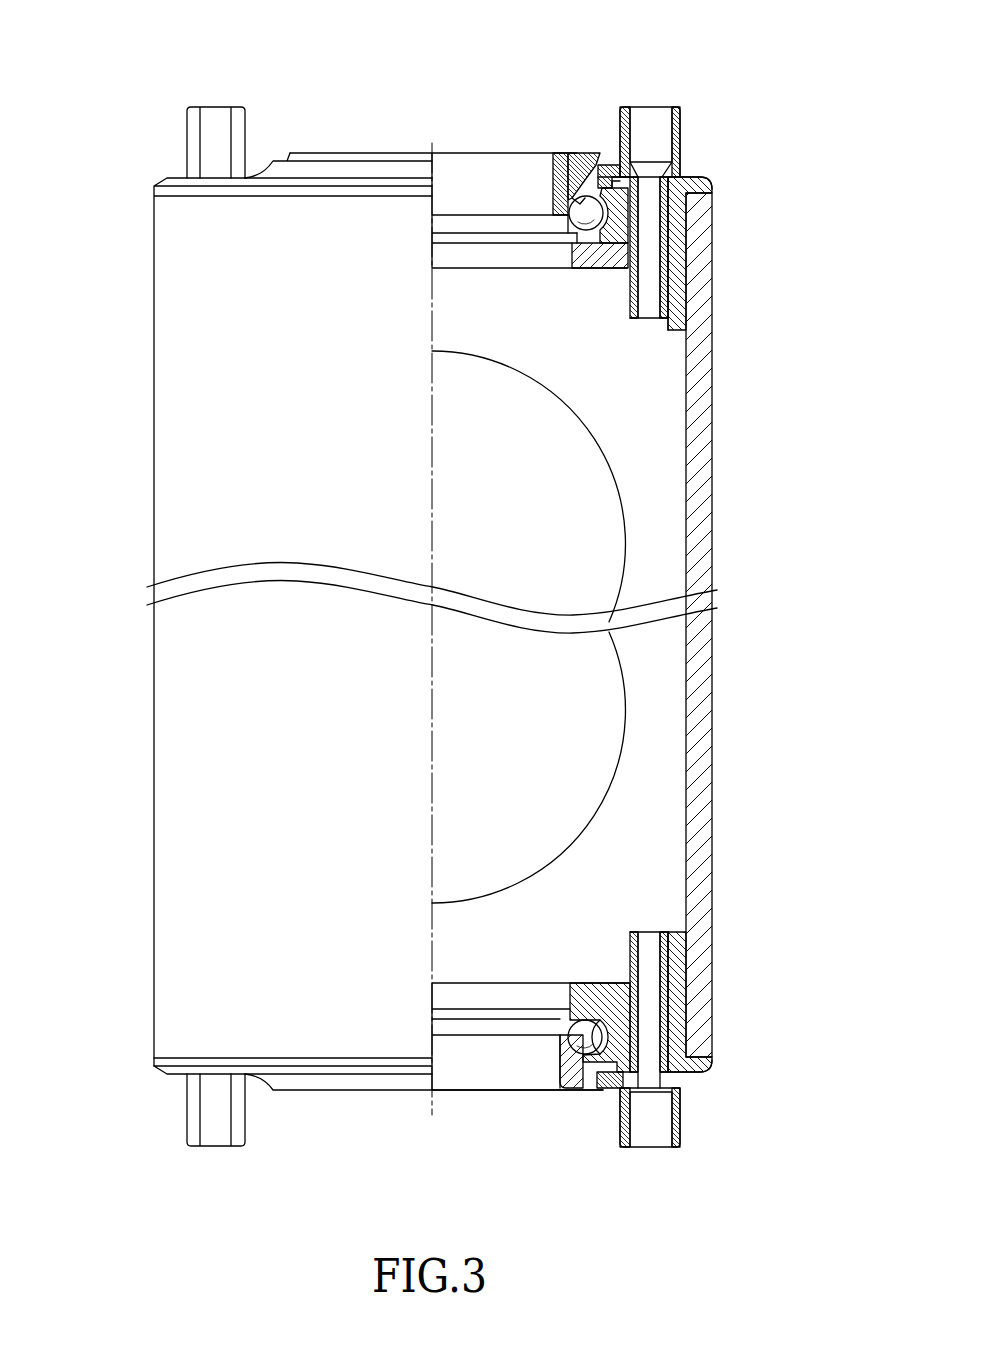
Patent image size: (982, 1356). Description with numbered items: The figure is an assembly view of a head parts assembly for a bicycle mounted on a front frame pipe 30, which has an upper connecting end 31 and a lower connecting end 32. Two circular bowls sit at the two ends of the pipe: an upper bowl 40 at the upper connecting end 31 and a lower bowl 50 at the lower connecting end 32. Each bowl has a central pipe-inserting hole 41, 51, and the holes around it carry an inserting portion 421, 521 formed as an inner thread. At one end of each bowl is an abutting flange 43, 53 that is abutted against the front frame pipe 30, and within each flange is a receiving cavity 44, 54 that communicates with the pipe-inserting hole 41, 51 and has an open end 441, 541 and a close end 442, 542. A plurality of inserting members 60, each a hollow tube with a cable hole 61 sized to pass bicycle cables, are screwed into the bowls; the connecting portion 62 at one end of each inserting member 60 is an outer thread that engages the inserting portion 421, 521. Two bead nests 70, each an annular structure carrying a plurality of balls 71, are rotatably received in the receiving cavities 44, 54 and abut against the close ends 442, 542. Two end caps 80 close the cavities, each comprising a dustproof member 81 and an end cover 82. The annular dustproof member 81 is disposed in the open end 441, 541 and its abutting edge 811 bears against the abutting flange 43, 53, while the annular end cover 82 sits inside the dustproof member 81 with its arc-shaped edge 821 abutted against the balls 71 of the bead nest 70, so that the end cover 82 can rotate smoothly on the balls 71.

The front frame pipe 30 is at (745, 642).
The upper connecting end 31 is at (745, 250).
The lower connecting end 32 is at (743, 1023).
The upper bowl 40 is at (160, 185).
The pipe-inserting hole 41 is at (447, 262).
The abutting flange 43 is at (698, 178).
The receiving cavity 44 is at (662, 225).
The open end 441 is at (620, 173).
The close end 442 is at (596, 246).
The inserting portion 421 is at (672, 240).
The connecting portion 62 is at (745, 268).
The lower bowl 50 is at (162, 1070).
The pipe-inserting hole 51 is at (531, 1055).
The abutting flange 53 is at (700, 1072).
The receiving cavity 54 is at (586, 1058).
The open end 541 is at (605, 1085).
The close end 542 is at (608, 997).
The inserting portion 521 is at (672, 1015).
The inserting member 60 is at (437, 650).
The cable hole 61 is at (687, 632).
The bead nest 70 is at (539, 223).
The ball 71 is at (578, 213).
The end cap 80 is at (601, 106).
The dustproof member 81 is at (642, 120).
The abutting edge 811 is at (613, 180).
The end cover 82 is at (557, 128).
The arc-shaped edge 821 is at (568, 205).